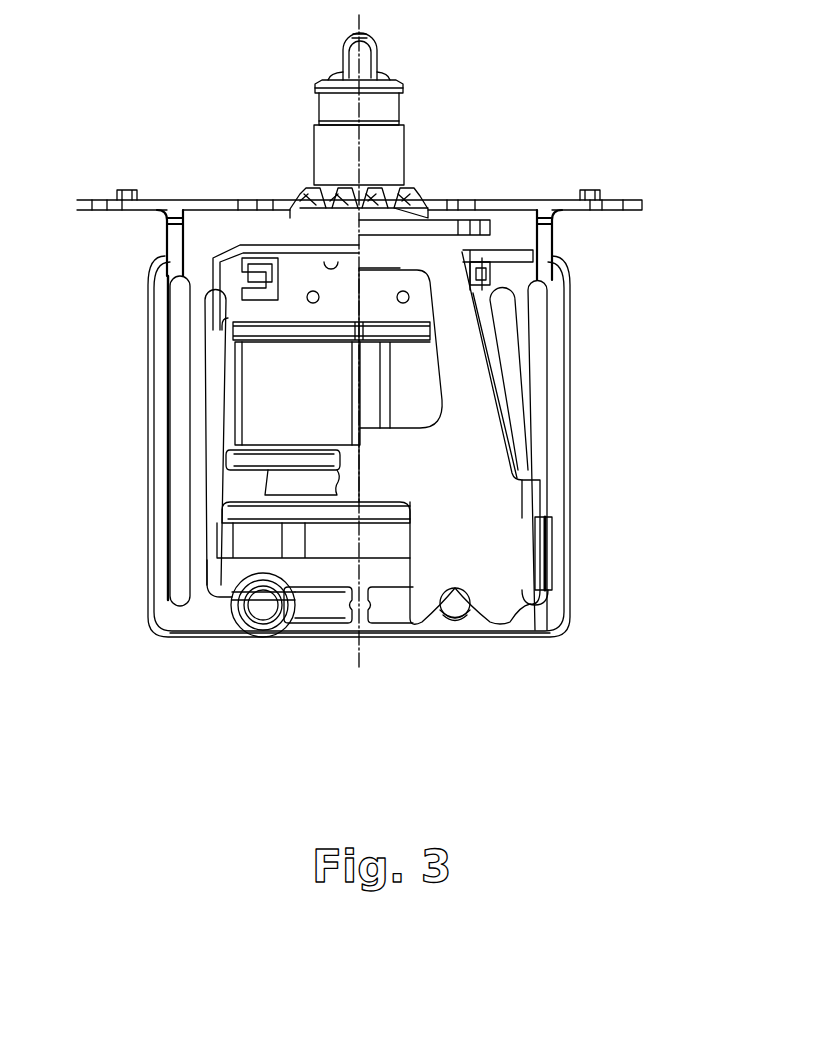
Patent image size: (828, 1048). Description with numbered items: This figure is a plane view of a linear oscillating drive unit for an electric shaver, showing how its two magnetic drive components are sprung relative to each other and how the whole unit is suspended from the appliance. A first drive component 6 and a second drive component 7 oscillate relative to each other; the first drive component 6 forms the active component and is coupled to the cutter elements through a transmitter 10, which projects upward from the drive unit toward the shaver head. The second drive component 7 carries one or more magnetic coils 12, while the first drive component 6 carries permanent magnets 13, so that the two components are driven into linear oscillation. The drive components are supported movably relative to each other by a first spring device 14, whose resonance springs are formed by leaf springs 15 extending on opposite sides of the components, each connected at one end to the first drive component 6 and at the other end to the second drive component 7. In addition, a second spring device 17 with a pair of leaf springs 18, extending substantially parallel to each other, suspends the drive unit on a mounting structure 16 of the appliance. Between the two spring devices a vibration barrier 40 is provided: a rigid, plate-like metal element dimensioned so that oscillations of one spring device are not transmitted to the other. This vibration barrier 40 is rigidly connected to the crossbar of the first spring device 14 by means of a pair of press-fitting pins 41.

The transmitter 10 is at (405, 68).
The mounting structure 16 is at (615, 192).
The second drive component 7 is at (290, 310).
The magnetic coils 12 is at (243, 400).
The first spring device 14 is at (160, 447).
The permanent magnets 13 is at (222, 515).
The leaf springs 15 is at (165, 560).
The second spring device 17 is at (553, 407).
The leaf springs 18 is at (553, 432).
The first drive component 6 is at (400, 545).
The vibration barrier 40 is at (487, 570).
The press-fitting pins 41 is at (452, 606).